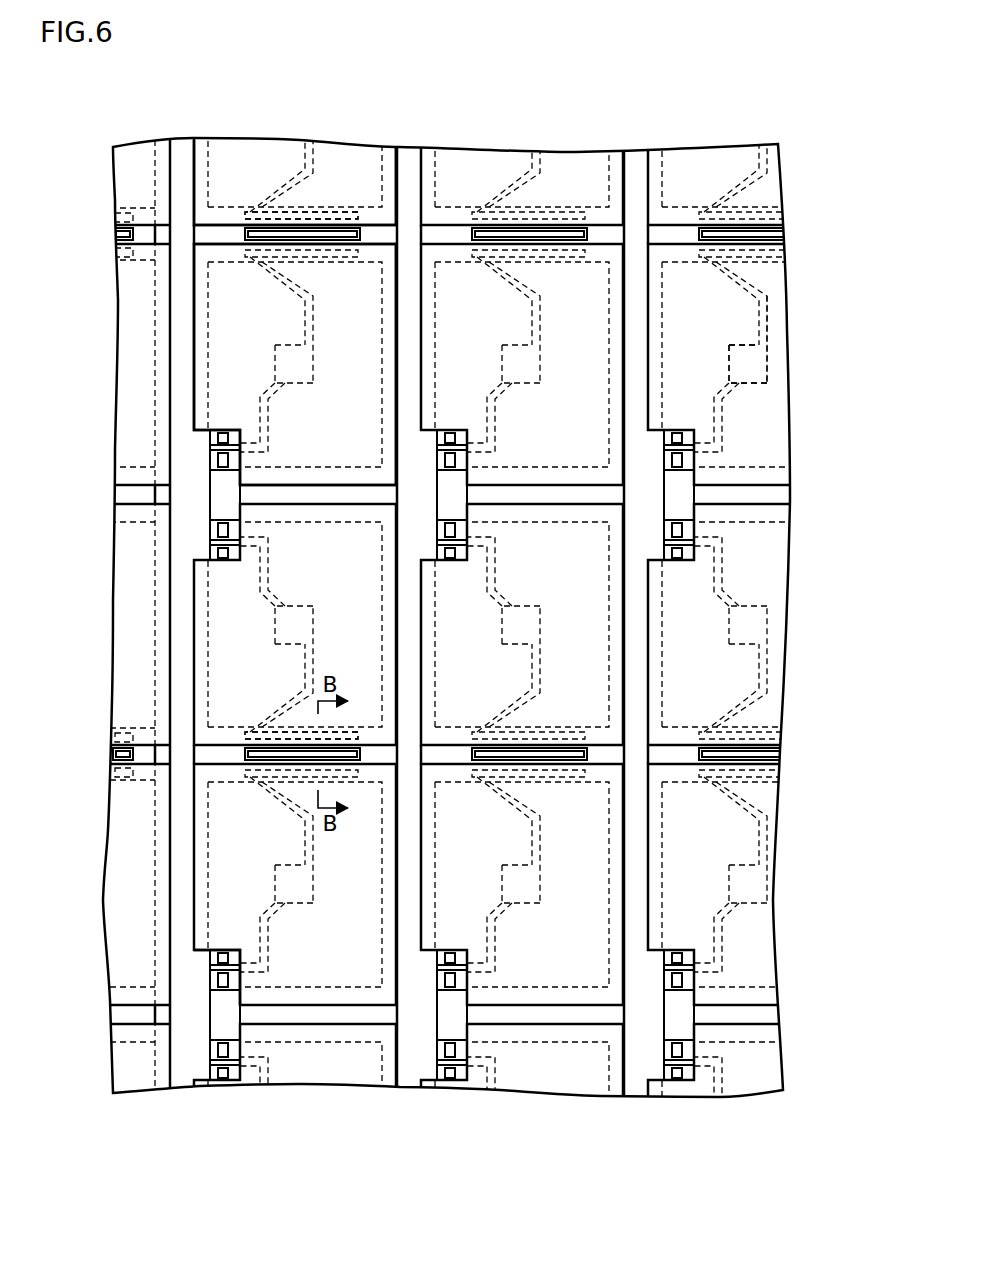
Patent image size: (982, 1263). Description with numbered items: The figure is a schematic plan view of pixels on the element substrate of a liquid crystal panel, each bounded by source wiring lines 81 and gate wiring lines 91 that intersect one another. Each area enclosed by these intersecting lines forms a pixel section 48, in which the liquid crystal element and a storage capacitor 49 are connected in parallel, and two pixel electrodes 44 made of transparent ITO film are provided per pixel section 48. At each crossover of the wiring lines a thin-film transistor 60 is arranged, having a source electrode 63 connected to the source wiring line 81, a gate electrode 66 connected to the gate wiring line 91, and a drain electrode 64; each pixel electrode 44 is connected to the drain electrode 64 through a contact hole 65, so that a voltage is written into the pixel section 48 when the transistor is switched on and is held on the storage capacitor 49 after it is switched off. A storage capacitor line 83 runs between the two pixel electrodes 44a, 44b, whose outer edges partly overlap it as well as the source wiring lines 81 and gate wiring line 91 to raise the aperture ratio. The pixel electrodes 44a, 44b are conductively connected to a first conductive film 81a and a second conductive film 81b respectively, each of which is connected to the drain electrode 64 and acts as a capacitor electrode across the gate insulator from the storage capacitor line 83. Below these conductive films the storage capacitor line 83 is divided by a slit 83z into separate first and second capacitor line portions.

The pixel electrode 44 is at (560, 182).
The first pixel electrode 44a is at (372, 194).
The second pixel electrode 44b is at (362, 417).
The source wiring line 81 is at (182, 152).
The first conductive film 81a is at (312, 215).
The second conductive film 81b is at (330, 255).
The storage capacitor line 83 is at (223, 233).
The slit 83z is at (248, 234).
The storage capacitor 49 is at (247, 197).
The thin-film transistor 60 is at (213, 420).
The source electrode 63 is at (668, 428).
The drain electrode 64 is at (685, 448).
The contact hole 65 is at (752, 356).
The gate electrode 66 is at (690, 437).
The gate wiring line 91 is at (118, 495).
The pixel section 48 is at (220, 924).